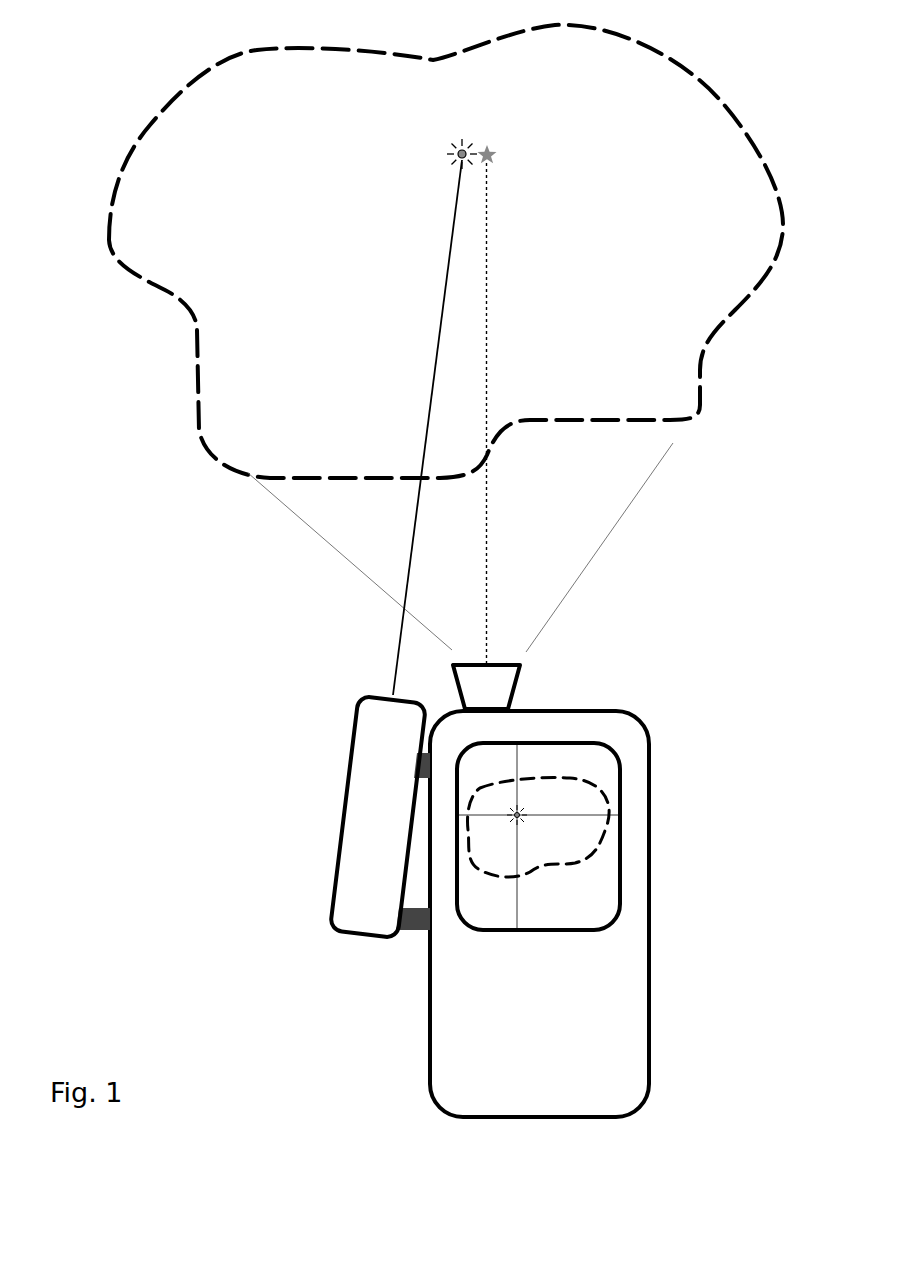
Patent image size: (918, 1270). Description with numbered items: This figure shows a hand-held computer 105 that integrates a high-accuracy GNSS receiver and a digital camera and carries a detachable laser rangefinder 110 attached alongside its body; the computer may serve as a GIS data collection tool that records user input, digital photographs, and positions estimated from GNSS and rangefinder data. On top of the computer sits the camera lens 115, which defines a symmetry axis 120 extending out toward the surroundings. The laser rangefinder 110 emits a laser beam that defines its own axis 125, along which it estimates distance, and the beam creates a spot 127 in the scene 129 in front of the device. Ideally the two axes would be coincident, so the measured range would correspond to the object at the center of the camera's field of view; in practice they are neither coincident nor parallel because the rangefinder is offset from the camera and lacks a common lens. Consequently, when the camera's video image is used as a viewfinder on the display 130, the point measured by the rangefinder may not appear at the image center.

The hand-held computer 105 is at (563, 1064).
The detachable laser rangefinder 110 is at (333, 865).
The camera lens 115 is at (518, 692).
The symmetry axis 120 is at (492, 380).
The axis 125 is at (430, 358).
The spot 127 is at (450, 158).
The scene 129 is at (641, 247).
The display 130 is at (520, 932).